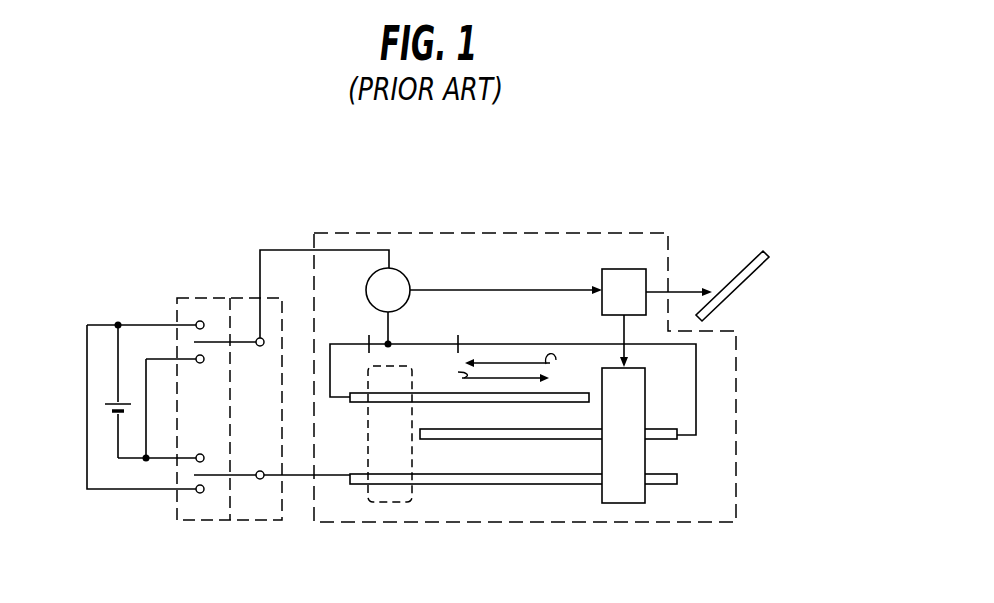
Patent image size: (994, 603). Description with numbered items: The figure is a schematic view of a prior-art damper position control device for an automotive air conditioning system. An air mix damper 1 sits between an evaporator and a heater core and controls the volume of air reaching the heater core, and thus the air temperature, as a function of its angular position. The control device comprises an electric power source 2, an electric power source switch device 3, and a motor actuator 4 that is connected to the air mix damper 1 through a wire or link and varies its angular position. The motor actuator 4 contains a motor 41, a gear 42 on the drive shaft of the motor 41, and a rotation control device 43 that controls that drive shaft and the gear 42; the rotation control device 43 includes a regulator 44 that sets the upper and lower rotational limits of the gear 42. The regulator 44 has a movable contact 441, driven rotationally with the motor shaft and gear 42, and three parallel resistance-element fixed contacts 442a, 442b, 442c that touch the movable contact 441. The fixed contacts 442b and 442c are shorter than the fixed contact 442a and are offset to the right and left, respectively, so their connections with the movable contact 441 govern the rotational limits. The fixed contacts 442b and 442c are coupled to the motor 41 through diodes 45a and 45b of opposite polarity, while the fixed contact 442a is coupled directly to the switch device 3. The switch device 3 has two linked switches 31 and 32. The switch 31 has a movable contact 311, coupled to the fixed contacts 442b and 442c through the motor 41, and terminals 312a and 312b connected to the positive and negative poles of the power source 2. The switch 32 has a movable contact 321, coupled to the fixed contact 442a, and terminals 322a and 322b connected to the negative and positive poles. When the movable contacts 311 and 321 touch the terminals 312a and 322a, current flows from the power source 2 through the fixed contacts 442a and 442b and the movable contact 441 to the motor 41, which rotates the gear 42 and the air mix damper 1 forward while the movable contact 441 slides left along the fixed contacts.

The air mix damper 1 is at (732, 298).
The electric power source 2 is at (108, 418).
The electric power source switch device 3 is at (210, 522).
The switch 31 is at (227, 321).
The movable contact 311 is at (256, 338).
The terminal 312a is at (200, 321).
The terminal 312b is at (197, 356).
The switch 32 is at (240, 503).
The movable contact 321 is at (249, 481).
The terminal 322a is at (197, 463).
The terminal 322b is at (198, 494).
The motor actuator 4 is at (545, 233).
The motor 41 is at (399, 268).
The gear 42 is at (632, 268).
The rotation control device 43 is at (612, 503).
The regulator 44 is at (577, 482).
The movable contact 441 is at (637, 496).
The fixed contact 442a is at (513, 481).
The fixed contact 442b is at (565, 436).
The fixed contact 442c is at (470, 398).
The diode 45a is at (450, 338).
The diode 45b is at (361, 338).